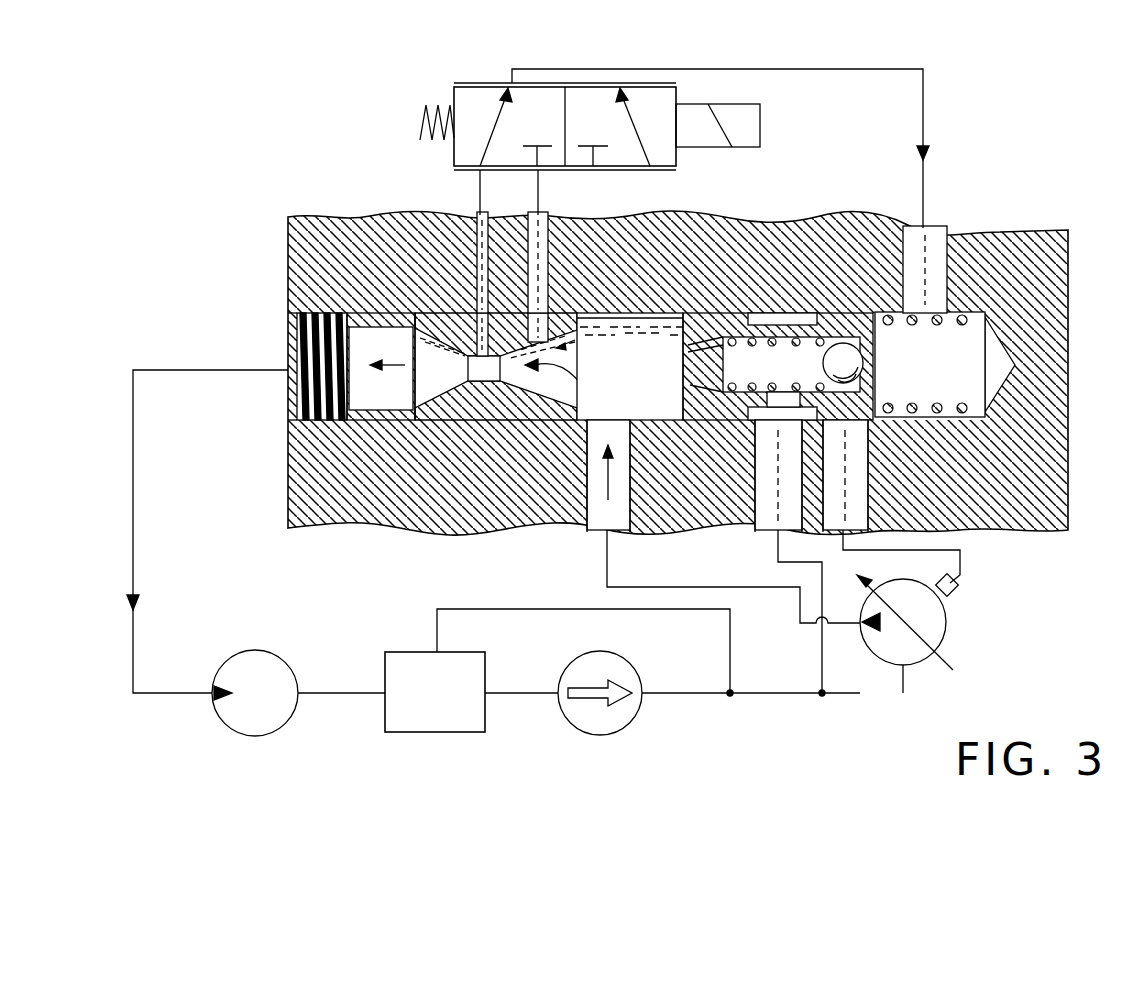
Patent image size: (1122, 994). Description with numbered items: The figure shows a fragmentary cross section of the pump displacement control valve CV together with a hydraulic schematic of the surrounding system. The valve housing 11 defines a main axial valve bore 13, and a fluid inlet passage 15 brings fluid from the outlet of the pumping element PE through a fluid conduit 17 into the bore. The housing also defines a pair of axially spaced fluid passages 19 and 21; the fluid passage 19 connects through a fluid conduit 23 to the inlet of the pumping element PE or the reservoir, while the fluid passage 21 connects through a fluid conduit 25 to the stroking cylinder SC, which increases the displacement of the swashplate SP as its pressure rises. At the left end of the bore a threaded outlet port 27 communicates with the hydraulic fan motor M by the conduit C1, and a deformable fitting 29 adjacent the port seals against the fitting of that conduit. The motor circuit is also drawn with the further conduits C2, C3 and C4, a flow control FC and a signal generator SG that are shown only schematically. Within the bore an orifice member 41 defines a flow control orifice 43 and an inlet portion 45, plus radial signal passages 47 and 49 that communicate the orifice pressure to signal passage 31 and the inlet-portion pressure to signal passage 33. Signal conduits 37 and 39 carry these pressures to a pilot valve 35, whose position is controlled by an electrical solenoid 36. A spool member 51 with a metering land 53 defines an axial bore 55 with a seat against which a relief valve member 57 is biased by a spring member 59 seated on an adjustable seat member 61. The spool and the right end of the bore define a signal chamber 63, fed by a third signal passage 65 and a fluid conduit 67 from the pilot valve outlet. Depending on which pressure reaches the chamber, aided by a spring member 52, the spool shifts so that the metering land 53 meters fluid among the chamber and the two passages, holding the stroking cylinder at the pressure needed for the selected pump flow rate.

The valve housing 11 is at (1028, 232).
The main axial valve bore 13 is at (612, 313).
The fluid inlet passage 15 is at (625, 455).
The fluid conduit 17 is at (683, 587).
The fluid passage 19 is at (790, 455).
The fluid passage 21 is at (848, 470).
The fluid conduit 23 is at (778, 545).
The fluid conduit 25 is at (845, 538).
The threaded outlet port 27 is at (290, 330).
The deformable fitting 29 is at (372, 313).
The signal passage 31 is at (480, 243).
The signal passage 33 is at (548, 243).
The pilot valve 35 is at (465, 70).
The electrical solenoid 36 is at (718, 148).
The signal conduit 37 is at (478, 192).
The signal conduit 39 is at (540, 190).
The orifice member 41 is at (450, 408).
The flow control orifice 43 is at (490, 385).
The inlet portion 45 is at (568, 379).
The radial signal passage 47 is at (482, 330).
The radial signal passage 49 is at (533, 335).
The spool member 51 is at (788, 317).
The spring member 52 is at (940, 415).
The metering land 53 is at (855, 313).
The axial bore 55 is at (791, 364).
The relief valve member 57 is at (855, 360).
The spring member 59 is at (726, 335).
The adjustable seat member 61 is at (700, 365).
The signal chamber 63 is at (972, 362).
The third signal passage 65 is at (940, 275).
The fluid conduit 67 is at (875, 70).
The pump displacement control valve CV is at (340, 155).
The conduit C1 is at (133, 525).
The conduit C2 is at (538, 693).
The conduit C3 is at (700, 693).
The conduit C4 is at (540, 609).
The hydraulic fan motor M is at (255, 650).
The flow controller FC is at (395, 652).
The signal generator SG is at (600, 735).
The stroking cylinder SC is at (960, 593).
The pumping element PE is at (950, 635).
The swashplate SP is at (955, 655).